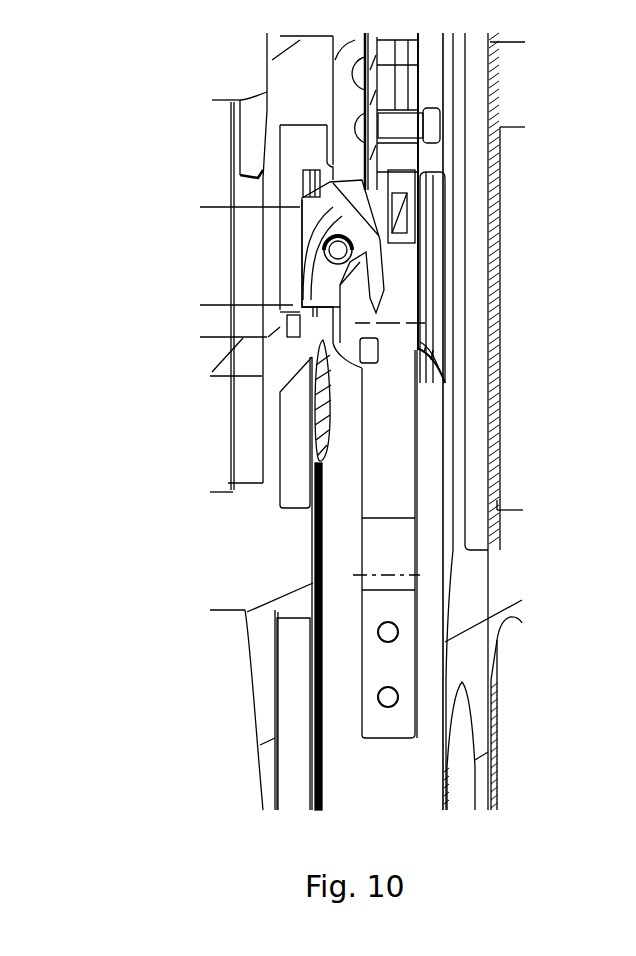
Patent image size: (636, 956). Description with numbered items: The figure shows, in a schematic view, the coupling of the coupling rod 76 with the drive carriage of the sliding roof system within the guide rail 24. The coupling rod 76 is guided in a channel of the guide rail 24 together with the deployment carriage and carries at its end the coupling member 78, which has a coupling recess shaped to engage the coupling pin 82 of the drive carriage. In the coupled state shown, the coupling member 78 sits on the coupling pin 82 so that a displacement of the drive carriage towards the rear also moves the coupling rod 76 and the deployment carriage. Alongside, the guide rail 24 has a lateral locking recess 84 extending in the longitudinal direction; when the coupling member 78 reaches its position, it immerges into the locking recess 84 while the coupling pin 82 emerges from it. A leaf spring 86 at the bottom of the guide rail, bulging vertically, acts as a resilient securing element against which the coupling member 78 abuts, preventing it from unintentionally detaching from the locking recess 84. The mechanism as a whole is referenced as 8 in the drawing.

The locking mechanism 8 is at (352, 303).
The guide rail 24 is at (490, 68).
The coupling rod 76 is at (325, 332).
The coupling member 78 is at (345, 207).
The coupling pin 82 is at (353, 247).
The lateral locking recess 84 is at (340, 306).
The leaf spring 86 is at (387, 397).